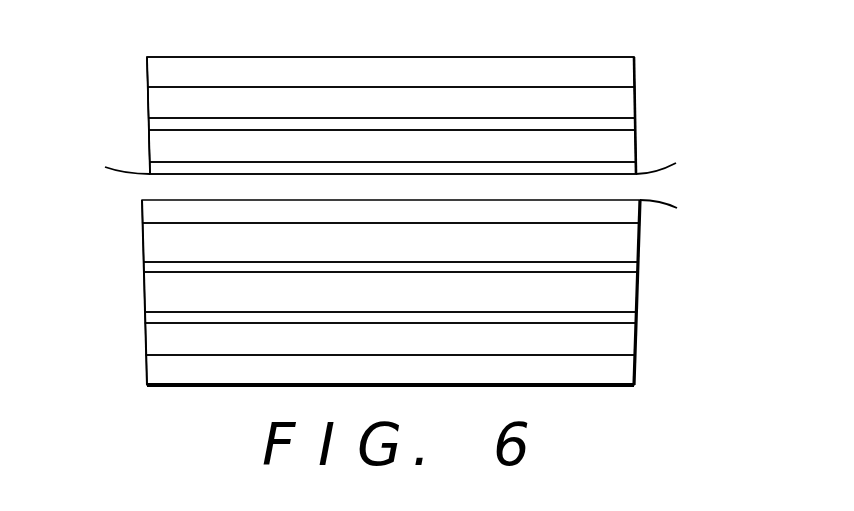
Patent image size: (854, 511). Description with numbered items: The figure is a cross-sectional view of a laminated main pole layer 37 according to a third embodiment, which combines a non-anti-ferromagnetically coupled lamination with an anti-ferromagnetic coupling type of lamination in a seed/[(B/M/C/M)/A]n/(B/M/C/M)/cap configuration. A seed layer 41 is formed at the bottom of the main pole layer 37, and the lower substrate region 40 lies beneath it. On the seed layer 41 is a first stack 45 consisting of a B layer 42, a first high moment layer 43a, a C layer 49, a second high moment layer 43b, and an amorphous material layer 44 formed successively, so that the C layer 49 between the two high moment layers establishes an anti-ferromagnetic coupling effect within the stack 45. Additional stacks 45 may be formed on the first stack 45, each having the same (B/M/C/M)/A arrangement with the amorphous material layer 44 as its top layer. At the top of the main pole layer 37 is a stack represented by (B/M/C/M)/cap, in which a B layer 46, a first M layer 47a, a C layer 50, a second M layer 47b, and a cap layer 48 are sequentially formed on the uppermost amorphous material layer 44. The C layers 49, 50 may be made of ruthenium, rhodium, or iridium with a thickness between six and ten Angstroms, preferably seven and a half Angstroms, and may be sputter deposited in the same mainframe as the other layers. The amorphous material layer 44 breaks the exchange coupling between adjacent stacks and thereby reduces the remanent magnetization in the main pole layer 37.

The main pole layer 37 is at (108, 53).
The substrate layer 40 is at (617, 368).
The seed layer 41 is at (177, 340).
The B layer 42 is at (617, 318).
The first high moment layer 43a is at (612, 293).
The second high moment layer 43b is at (612, 245).
The amorphous material layer 44 is at (612, 213).
The stack 45 is at (142, 200).
The B layer 46 is at (166, 167).
The first M layer 47a is at (612, 145).
The second M layer 47b is at (612, 100).
The cap layer 48 is at (612, 70).
The C layer 49 is at (612, 268).
The C layer 50 is at (172, 122).